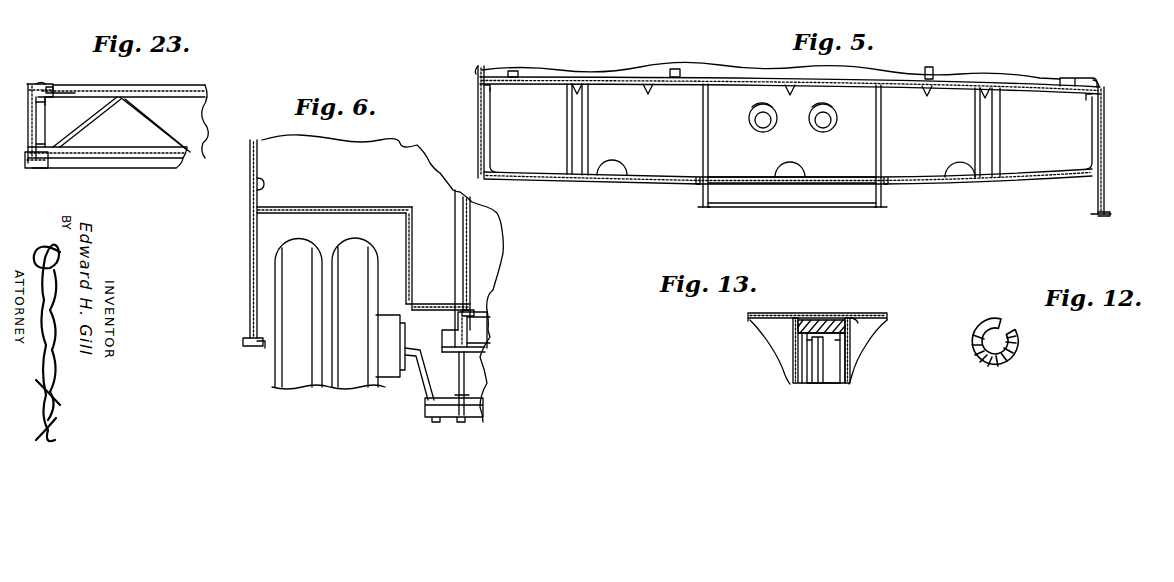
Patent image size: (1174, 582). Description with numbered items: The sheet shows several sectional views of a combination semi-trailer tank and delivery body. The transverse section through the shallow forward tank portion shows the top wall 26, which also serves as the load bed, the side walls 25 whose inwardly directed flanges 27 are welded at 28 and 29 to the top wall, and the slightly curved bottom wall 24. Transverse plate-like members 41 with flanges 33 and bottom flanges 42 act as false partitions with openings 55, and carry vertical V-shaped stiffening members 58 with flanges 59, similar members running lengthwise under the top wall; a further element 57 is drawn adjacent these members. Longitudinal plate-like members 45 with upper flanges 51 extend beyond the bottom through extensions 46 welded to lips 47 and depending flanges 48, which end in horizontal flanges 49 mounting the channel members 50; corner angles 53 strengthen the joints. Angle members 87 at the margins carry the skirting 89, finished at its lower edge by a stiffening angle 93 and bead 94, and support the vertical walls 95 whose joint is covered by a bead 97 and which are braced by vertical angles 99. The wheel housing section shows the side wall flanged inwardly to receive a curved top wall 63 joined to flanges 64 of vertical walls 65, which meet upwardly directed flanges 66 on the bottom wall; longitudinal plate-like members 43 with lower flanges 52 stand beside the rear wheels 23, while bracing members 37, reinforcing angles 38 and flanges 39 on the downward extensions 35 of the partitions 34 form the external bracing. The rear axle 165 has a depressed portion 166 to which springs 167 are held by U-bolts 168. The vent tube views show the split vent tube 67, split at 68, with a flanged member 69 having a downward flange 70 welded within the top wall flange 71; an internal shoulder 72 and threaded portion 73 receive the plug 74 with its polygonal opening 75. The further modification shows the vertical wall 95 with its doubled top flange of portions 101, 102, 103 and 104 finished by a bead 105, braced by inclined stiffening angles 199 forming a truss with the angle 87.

In FIG. 6, the rear wheels 23 is at (348, 247).
In FIG. 6, the bottom wall 24 is at (440, 306).
In FIG. 6, the side walls 25 is at (250, 180).
In FIG. 5, the side walls 25 is at (492, 128).
In FIG. 23, the top wall 26 is at (172, 158).
In FIG. 5, the top wall 26 is at (552, 80).
In FIG. 13, the top wall 26 is at (777, 313).
In FIG. 5, the inwardly directed flanges 27 is at (490, 90).
In FIG. 5, the weld 28 is at (498, 87).
In FIG. 5, the weld 29 is at (486, 88).
In FIG. 5, the flanges 33 is at (548, 86).
In FIG. 13, the transversely extending plate-like members 34 is at (796, 340).
In FIG. 6, the downwardly extending portions 35 is at (492, 333).
In FIG. 6, the longitudinally extending bracing members 37 is at (492, 320).
In FIG. 6, the reinforcing angles 38 is at (472, 356).
In FIG. 6, the horizontal flanges 39 is at (484, 350).
In FIG. 5, the transversely extending plate-like members 41 is at (922, 74).
In FIG. 5, the bottom flanges 42 is at (660, 176).
In FIG. 6, the plate-like members 43 is at (470, 224).
In FIG. 5, the plate-like members 45 is at (708, 137).
In FIG. 5, the extensions 46 is at (700, 186).
In FIG. 5, the lips or flanges 47 is at (700, 180).
In FIG. 5, the depending flanges 48 is at (712, 190).
In FIG. 5, the outwardly directed horizontal flanges 49 is at (700, 209).
In FIG. 5, the transversely extending channel members 50 is at (790, 205).
In FIG. 5, the inwardly directed flanges 51 is at (712, 88).
In FIG. 6, the inwardly directed flanges 52 is at (480, 308).
In FIG. 6, the angles 53 is at (458, 212).
In FIG. 5, the openings 55 is at (615, 164).
In FIG. 5, the hole 57 is at (772, 132).
In FIG. 5, the V-shaped stiffening members 58 is at (585, 84).
In FIG. 5, the flanges 59 is at (592, 88).
In FIG. 6, the top curved wall 63 is at (328, 207).
In FIG. 6, the flanges 64 is at (406, 212).
In FIG. 6, the vertical walls 65 is at (413, 258).
In FIG. 6, the upwardly directed flanges 66 is at (412, 297).
In FIG. 13, the split vent tubes 67 is at (812, 362).
In FIG. 12, the split vent tubes 67 is at (1019, 344).
In FIG. 13, the longitudinal split 68 is at (845, 365).
In FIG. 12, the longitudinal split 68 is at (1004, 322).
In FIG. 13, the flanged member 69 is at (851, 342).
In FIG. 13, the downwardly directed flange 70 is at (818, 384).
In FIG. 13, the downwardly directed flange 71 is at (793, 330).
In FIG. 13, the internal shoulder 72 is at (806, 352).
In FIG. 13, the internally threaded portion 73 is at (852, 316).
In FIG. 13, the plug 74 is at (813, 318).
In FIG. 13, the polygonal opening 75 is at (832, 318).
In FIG. 23, the angle members 87 is at (64, 160).
In FIG. 5, the angle members 87 is at (488, 72).
In FIG. 6, the skirting 89 is at (250, 310).
In FIG. 5, the skirting 89 is at (478, 112).
In FIG. 6, the stiffening angle 93 is at (264, 348).
In FIG. 5, the stiffening angle 93 is at (1097, 212).
In FIG. 6, the rounded bead member 94 is at (244, 344).
In FIG. 5, the rounded bead member 94 is at (1107, 214).
In FIG. 23, the vertical walls 95 is at (46, 107).
In FIG. 5, the vertical walls 95 is at (735, 66).
In FIG. 23, the curved bead member 97 is at (27, 168).
In FIG. 5, the curved bead member 97 is at (478, 78).
In FIG. 5, the vertical angle members 99 is at (675, 69).
In FIG. 23, the horizontally extending portion 101 is at (38, 85).
In FIG. 23, the depending portion 102 is at (52, 87).
In FIG. 23, the upwardly extending portion 103 is at (62, 94).
In FIG. 23, the horizontally extending portion 104 is at (28, 90).
In FIG. 23, the rounded bead 105 is at (40, 83).
In FIG. 6, the rear axle 165 is at (410, 362).
In FIG. 6, the depressed portion 166 is at (486, 413).
In FIG. 6, the springs 167 is at (425, 370).
In FIG. 6, the U-bolts 168 is at (470, 392).
In FIG. 23, the inclined stiffening angles 199 is at (148, 102).